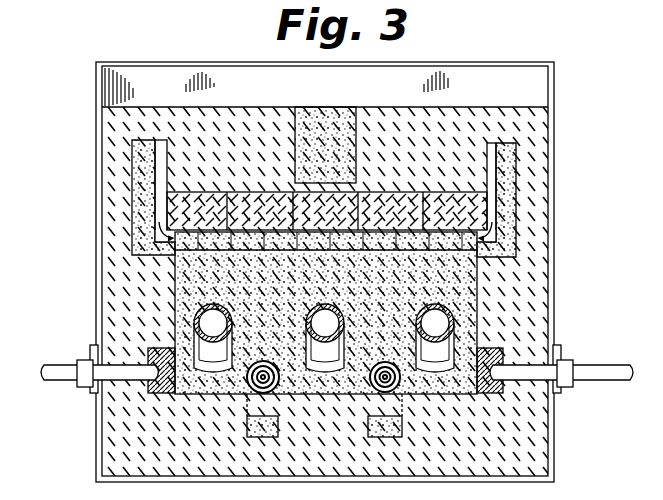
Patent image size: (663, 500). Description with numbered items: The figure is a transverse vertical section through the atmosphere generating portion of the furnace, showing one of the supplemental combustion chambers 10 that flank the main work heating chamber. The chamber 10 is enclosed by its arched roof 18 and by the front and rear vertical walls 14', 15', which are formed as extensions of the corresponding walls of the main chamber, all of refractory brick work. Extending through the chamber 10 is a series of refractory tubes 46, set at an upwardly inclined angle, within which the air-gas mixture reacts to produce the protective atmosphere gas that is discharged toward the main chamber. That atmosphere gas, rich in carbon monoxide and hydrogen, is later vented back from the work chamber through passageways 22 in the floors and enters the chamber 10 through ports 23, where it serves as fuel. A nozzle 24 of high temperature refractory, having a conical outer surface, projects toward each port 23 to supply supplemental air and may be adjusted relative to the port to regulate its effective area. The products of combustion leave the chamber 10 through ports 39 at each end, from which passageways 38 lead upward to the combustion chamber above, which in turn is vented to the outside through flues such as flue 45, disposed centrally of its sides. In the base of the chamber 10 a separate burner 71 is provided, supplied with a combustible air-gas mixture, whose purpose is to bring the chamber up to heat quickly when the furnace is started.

The combustion chamber 10 is at (358, 279).
The front vertical wall 14' is at (562, 250).
The rear vertical wall 15' is at (296, 291).
The arched roof 18 is at (323, 222).
The passageway 22 is at (368, 430).
The port 23 is at (369, 385).
The nozzle 24 is at (378, 365).
The passageway 38 is at (142, 194).
The port 39 is at (176, 250).
The flue 45 is at (343, 136).
The refractory tube 46 is at (304, 343).
The burner 71 is at (123, 374).